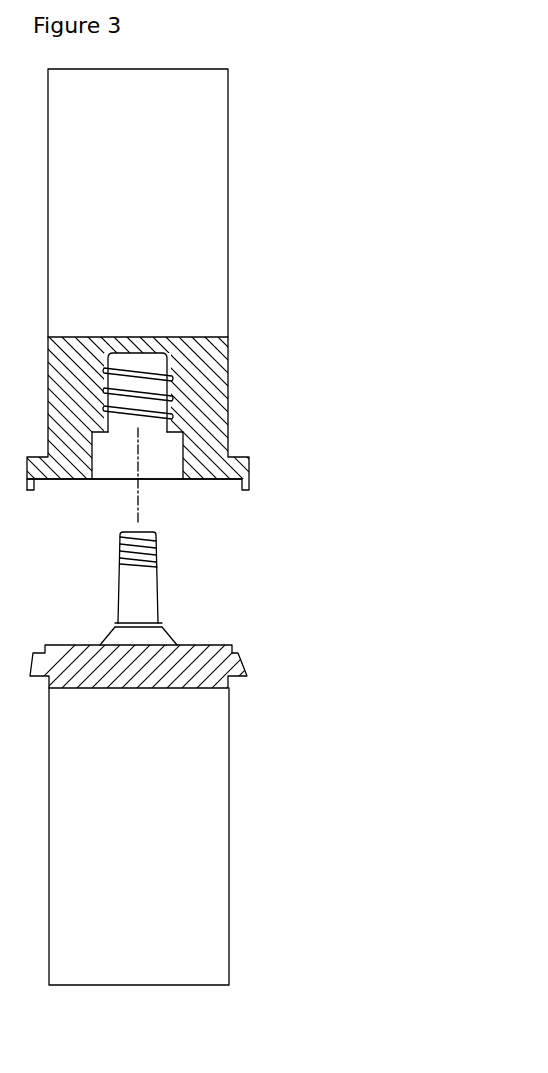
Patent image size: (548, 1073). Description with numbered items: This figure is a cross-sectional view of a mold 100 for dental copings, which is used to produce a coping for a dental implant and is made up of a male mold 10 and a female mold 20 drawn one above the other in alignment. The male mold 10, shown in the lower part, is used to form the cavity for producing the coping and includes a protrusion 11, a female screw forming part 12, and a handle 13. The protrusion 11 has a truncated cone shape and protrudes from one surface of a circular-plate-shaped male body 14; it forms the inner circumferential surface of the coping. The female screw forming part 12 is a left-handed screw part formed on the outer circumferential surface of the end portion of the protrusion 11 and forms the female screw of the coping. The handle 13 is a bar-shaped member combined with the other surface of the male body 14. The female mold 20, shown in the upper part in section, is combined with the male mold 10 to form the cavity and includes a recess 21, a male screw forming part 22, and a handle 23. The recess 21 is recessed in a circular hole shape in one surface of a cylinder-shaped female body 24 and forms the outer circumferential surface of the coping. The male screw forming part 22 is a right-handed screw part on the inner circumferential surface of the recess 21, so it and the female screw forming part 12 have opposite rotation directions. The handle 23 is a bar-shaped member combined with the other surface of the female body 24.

The mold 100 is at (400, 170).
The female mold 20 is at (280, 343).
The handle 23 is at (228, 190).
The female body 24 is at (228, 425).
The recess 21 is at (99, 460).
The male screw forming part 22 is at (172, 414).
The male mold 10 is at (312, 690).
The protrusion 11 is at (161, 597).
The female screw forming part 12 is at (159, 548).
The male body 14 is at (233, 645).
The handle 13 is at (229, 832).